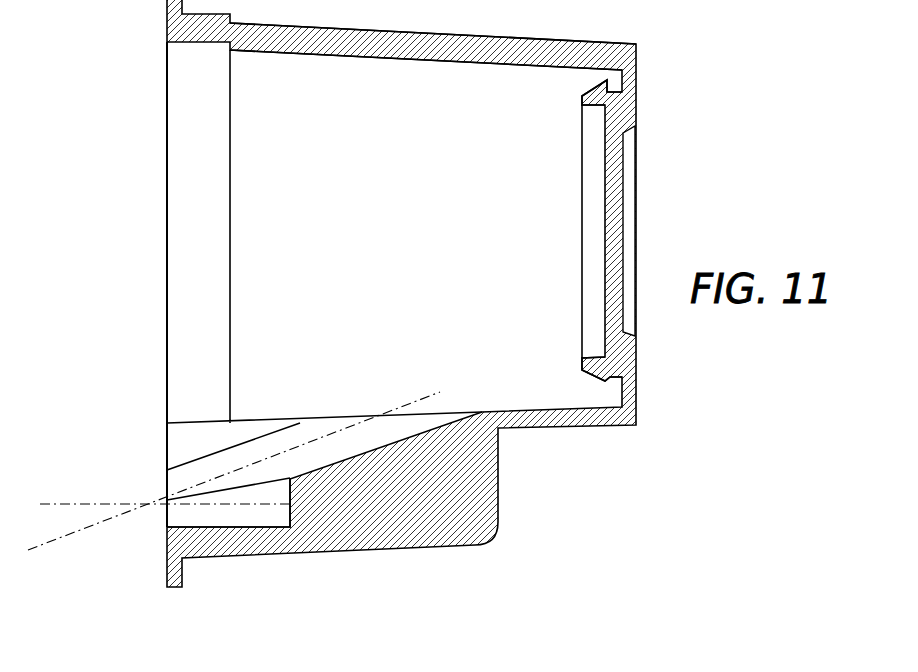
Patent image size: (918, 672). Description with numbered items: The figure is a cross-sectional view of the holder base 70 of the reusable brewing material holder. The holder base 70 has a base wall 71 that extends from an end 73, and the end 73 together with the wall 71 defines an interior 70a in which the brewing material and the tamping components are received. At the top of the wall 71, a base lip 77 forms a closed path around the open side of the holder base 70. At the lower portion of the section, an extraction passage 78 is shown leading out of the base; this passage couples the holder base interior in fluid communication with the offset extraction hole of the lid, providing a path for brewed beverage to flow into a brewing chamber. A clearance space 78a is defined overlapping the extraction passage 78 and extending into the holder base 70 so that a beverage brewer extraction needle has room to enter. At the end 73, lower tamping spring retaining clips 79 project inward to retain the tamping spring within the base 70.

The holder base 70 is at (677, 121).
The interior 70a is at (405, 306).
The base wall 71 is at (333, 55).
The end 73 is at (625, 223).
The base lip 77 is at (165, 28).
The extraction passage 78 is at (150, 513).
The clearance space 78a is at (222, 512).
The lower tamping spring retaining clips 79 is at (605, 81).